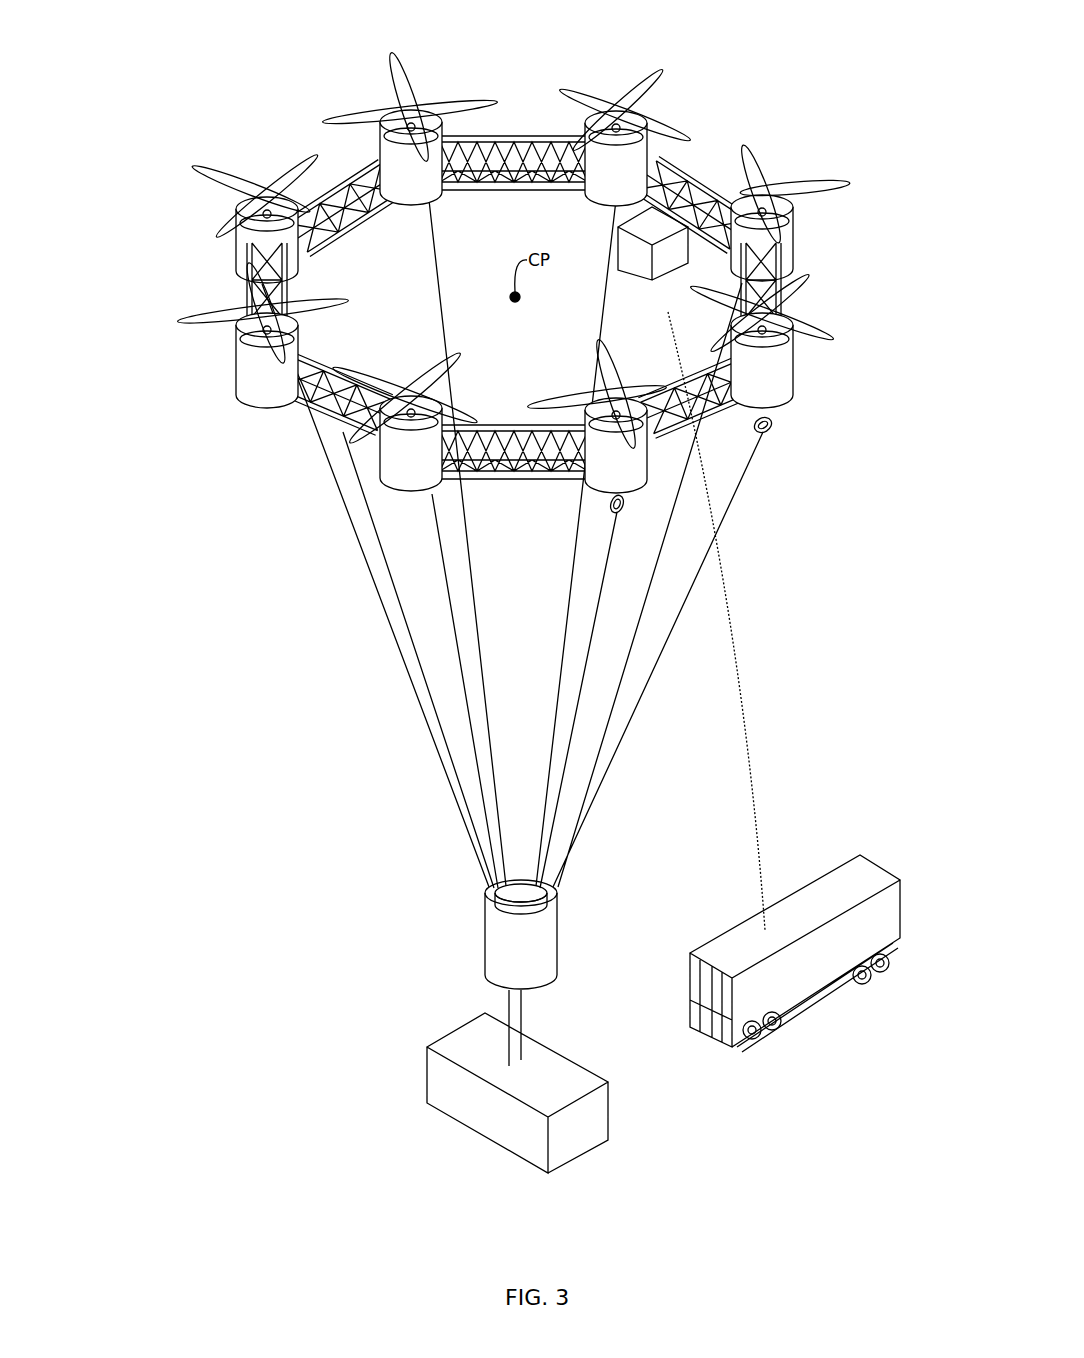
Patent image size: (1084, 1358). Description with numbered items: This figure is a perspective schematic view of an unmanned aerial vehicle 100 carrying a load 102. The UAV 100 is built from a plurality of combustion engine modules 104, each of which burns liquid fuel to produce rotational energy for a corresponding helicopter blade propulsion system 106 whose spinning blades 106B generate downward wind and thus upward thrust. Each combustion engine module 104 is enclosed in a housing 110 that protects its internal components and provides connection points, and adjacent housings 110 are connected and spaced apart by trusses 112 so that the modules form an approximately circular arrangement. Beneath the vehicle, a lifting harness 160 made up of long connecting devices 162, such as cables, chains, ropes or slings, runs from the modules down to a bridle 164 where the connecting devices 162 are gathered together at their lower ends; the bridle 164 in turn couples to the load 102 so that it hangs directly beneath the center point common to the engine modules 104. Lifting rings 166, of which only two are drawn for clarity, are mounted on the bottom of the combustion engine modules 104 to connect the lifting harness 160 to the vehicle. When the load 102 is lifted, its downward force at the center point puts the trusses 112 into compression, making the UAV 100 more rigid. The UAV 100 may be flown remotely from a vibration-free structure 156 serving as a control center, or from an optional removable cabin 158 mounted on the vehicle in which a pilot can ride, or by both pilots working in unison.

The unmanned aerial vehicle 100 is at (282, 158).
The load 102 is at (480, 1098).
The combustion engine module 104 is at (376, 108).
The helicopter blade propulsion system 106 is at (530, 268).
The blades 106B is at (396, 75).
The housing 110 is at (399, 184).
The truss 112 is at (700, 178).
The structure 156 is at (805, 907).
The removable cabin 158 is at (625, 268).
The lifting harness 160 is at (212, 1018).
The connecting devices 162 is at (487, 813).
The bridle 164 is at (515, 955).
The lifting rings 166 is at (778, 425).